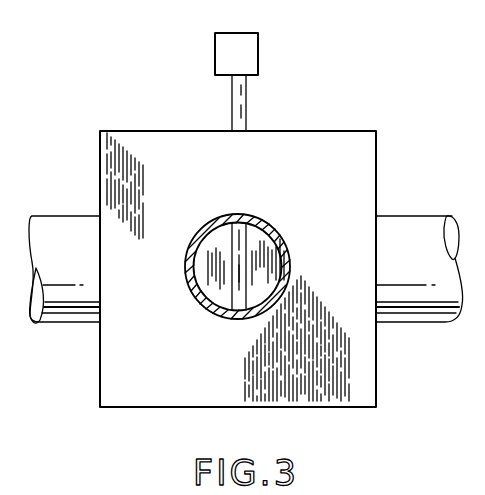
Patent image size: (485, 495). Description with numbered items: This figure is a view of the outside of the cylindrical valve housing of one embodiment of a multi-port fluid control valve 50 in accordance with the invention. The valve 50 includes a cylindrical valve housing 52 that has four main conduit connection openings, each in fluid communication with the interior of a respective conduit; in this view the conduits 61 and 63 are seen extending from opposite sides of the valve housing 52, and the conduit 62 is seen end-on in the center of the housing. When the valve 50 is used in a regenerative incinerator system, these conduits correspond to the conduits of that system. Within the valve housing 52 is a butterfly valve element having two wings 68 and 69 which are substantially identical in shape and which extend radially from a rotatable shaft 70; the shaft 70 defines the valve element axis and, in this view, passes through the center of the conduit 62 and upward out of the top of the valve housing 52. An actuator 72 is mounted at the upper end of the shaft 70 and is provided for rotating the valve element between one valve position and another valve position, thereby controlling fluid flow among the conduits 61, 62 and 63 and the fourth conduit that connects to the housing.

The multi-port fluid control valve 50 is at (358, 78).
The cylindrical valve housing 52 is at (311, 141).
The conduit 61 is at (405, 233).
The conduit 62 is at (233, 214).
The conduit 63 is at (77, 230).
The wing 68 is at (206, 258).
The wing 69 is at (236, 270).
The rotatable shaft 70 is at (246, 124).
The actuator 72 is at (259, 57).